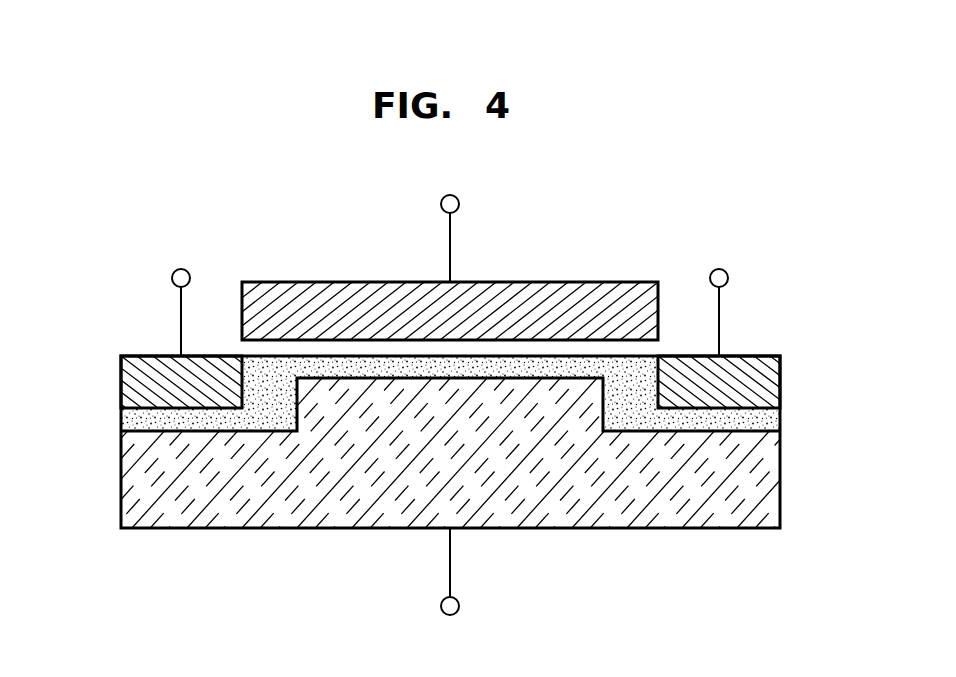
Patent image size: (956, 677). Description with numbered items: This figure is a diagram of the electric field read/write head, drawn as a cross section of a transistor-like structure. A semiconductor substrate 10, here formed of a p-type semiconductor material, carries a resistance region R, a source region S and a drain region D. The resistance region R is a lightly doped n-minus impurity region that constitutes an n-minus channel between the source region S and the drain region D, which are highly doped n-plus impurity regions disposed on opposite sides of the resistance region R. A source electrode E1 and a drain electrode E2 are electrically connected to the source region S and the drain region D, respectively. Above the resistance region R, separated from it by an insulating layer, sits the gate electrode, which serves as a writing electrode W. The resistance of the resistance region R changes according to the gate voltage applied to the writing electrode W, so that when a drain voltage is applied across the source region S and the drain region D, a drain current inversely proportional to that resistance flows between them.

The semiconductor substrate 10 is at (780, 508).
The source region S is at (177, 426).
The drain region D is at (737, 420).
The resistance region R is at (383, 369).
The source electrode E1 is at (145, 355).
The drain electrode E2 is at (748, 355).
The writing electrode W is at (560, 282).